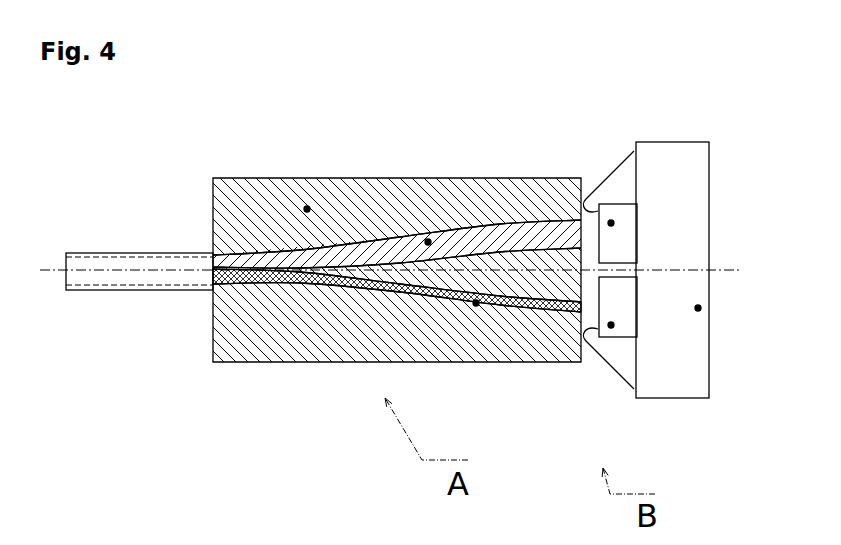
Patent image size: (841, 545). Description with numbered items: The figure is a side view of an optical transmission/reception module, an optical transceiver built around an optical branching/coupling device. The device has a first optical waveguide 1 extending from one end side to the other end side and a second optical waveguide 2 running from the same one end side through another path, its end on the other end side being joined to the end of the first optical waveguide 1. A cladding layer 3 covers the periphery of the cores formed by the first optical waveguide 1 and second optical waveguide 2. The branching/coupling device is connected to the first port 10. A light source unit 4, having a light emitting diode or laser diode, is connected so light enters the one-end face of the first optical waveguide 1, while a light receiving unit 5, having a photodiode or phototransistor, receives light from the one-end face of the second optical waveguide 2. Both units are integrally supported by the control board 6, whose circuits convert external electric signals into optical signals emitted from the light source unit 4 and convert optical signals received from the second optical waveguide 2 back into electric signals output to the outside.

The first optical waveguide 1 is at (476, 303).
The second optical waveguide 2 is at (428, 242).
The cladding layer 3 is at (307, 209).
The light source unit 4 is at (611, 325).
The light receiving unit 5 is at (611, 223).
The control board 6 is at (698, 308).
The first port 10 is at (138, 290).